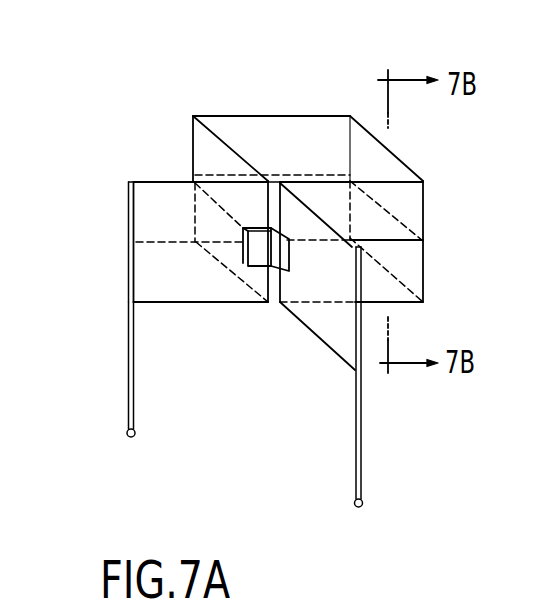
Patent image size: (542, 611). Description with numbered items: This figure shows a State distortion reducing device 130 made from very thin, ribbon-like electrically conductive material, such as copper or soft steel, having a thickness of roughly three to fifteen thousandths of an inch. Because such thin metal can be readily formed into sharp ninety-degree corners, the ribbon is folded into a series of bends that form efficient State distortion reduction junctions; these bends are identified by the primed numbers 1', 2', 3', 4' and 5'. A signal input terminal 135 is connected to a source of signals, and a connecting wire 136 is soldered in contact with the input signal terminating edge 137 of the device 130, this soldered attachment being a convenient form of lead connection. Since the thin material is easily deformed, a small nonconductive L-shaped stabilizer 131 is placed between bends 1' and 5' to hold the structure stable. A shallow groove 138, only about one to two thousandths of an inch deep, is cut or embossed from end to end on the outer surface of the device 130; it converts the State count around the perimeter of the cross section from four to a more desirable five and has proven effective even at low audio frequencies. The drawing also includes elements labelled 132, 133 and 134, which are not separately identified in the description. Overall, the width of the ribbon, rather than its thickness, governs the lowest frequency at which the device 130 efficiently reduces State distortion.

The State distortion reducing device 130 is at (256, 104).
The nonconductive L-shaped stabilizer 131 is at (259, 270).
The wedge arm 132 is at (364, 361).
The right pin rod 133 is at (366, 465).
The right pin ball end 134 is at (352, 514).
The signal input terminal 135 is at (142, 444).
The connecting wire 136 is at (144, 392).
The input signal terminating edge 137 is at (122, 208).
The groove 138 is at (391, 230).
The ninety degree bend 1' is at (351, 150).
The ninety degree bend 2' is at (425, 248).
The ninety degree bend 3' is at (375, 102).
The ninety degree bend 4' is at (209, 114).
The ninety degree bend 5' is at (208, 212).